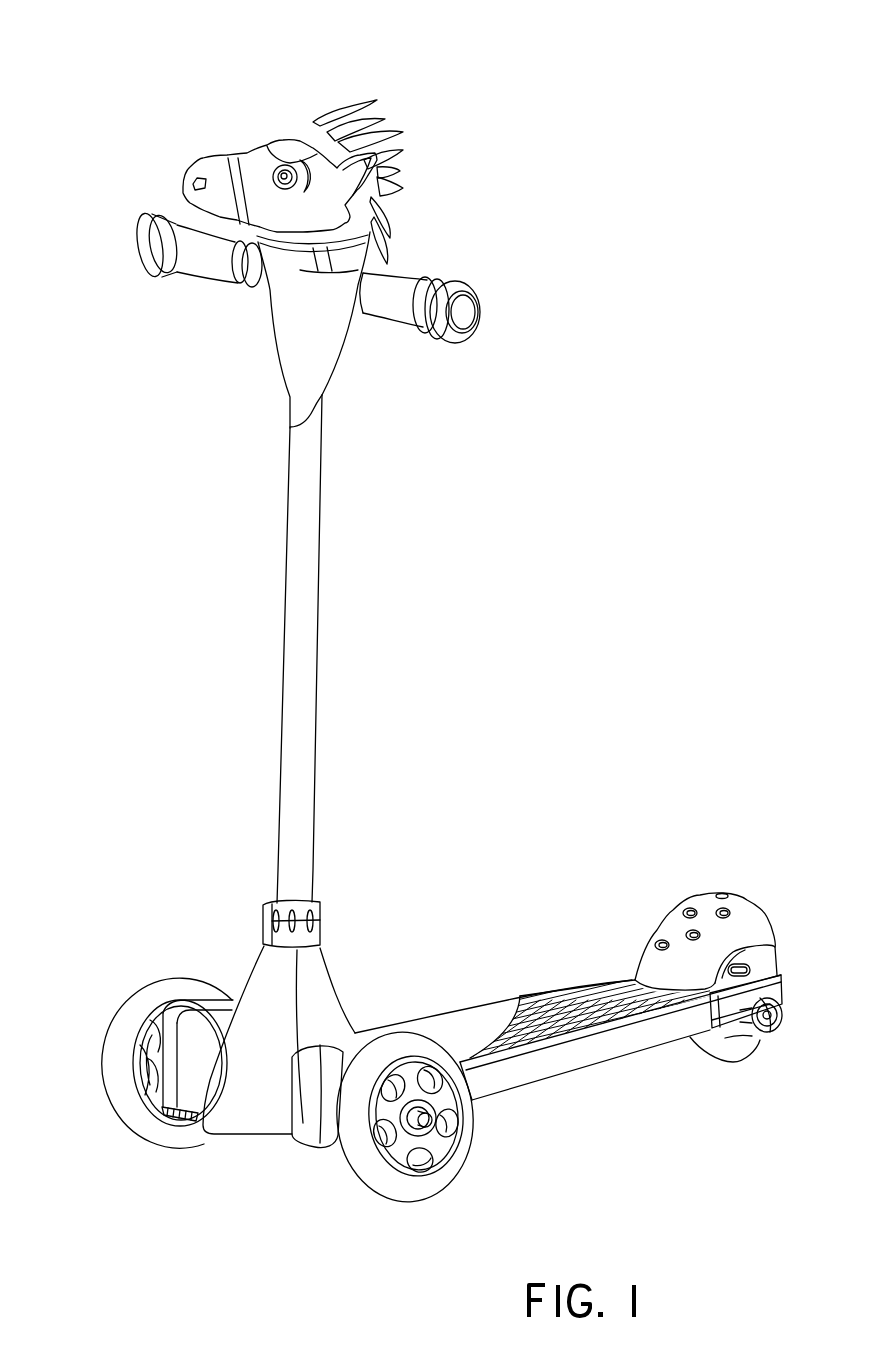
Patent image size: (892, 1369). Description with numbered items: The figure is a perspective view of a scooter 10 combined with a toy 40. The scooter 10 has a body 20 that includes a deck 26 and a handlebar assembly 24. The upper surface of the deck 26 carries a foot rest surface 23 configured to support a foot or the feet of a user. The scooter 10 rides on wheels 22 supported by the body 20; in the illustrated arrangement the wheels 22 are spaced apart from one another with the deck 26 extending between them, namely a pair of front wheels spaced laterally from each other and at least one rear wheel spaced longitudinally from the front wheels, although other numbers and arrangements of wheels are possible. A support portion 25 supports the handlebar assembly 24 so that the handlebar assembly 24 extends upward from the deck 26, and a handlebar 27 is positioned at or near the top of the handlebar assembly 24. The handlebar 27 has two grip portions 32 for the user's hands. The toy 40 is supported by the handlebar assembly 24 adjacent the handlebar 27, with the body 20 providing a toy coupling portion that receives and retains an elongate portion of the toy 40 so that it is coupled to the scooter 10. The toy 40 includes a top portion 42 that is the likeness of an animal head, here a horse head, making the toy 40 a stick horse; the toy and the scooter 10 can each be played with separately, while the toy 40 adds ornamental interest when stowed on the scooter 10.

The scooter 10 is at (514, 623).
The body 20 is at (437, 1001).
The wheels 22 is at (157, 1147).
The foot rest surface 23 is at (557, 1010).
The handlebar assembly 24 is at (265, 490).
The support portion 25 is at (238, 959).
The deck 26 is at (590, 978).
The handlebar 27 is at (205, 291).
The grip portions 32 is at (167, 227).
The toy 40 is at (275, 122).
The top portion 42 is at (260, 162).